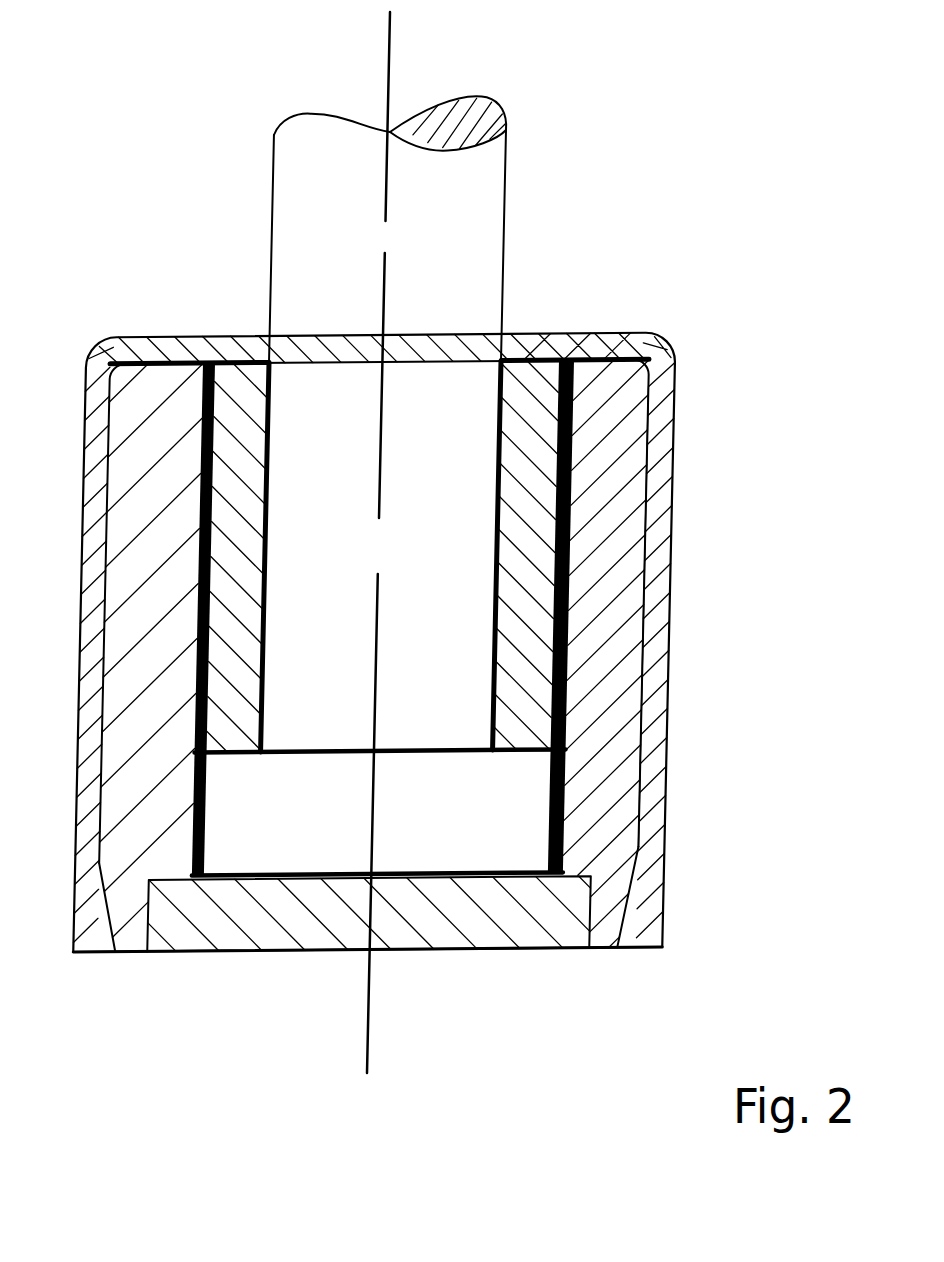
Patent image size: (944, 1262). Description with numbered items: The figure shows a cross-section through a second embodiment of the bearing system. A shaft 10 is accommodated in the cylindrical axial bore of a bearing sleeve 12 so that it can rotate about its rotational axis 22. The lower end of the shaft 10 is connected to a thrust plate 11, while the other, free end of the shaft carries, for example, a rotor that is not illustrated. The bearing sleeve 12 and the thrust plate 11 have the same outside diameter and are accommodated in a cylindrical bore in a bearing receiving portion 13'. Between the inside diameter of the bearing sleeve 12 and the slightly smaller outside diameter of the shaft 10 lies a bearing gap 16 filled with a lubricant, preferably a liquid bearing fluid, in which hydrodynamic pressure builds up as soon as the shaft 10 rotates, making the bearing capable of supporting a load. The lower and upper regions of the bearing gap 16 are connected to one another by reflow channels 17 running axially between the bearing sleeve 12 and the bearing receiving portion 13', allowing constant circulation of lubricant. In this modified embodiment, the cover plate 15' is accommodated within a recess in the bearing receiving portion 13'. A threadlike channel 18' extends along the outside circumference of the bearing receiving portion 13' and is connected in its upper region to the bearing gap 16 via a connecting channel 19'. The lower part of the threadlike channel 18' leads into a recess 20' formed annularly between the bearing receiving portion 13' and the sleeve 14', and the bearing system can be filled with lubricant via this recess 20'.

The shaft 10 is at (482, 190).
The thrust plate 11 is at (427, 848).
The bearing sleeve 12 is at (537, 393).
The bearing receiving portion 13' is at (431, 656).
The sleeve 14' is at (438, 643).
The cover plate 15' is at (369, 954).
The bearing gap 16 is at (567, 572).
The reflow channels 17 is at (567, 658).
The threadlike channel 18' is at (711, 617).
The connecting channel 19' is at (447, 300).
The recess 20' is at (413, 928).
The rotational axis 22 is at (389, 40).